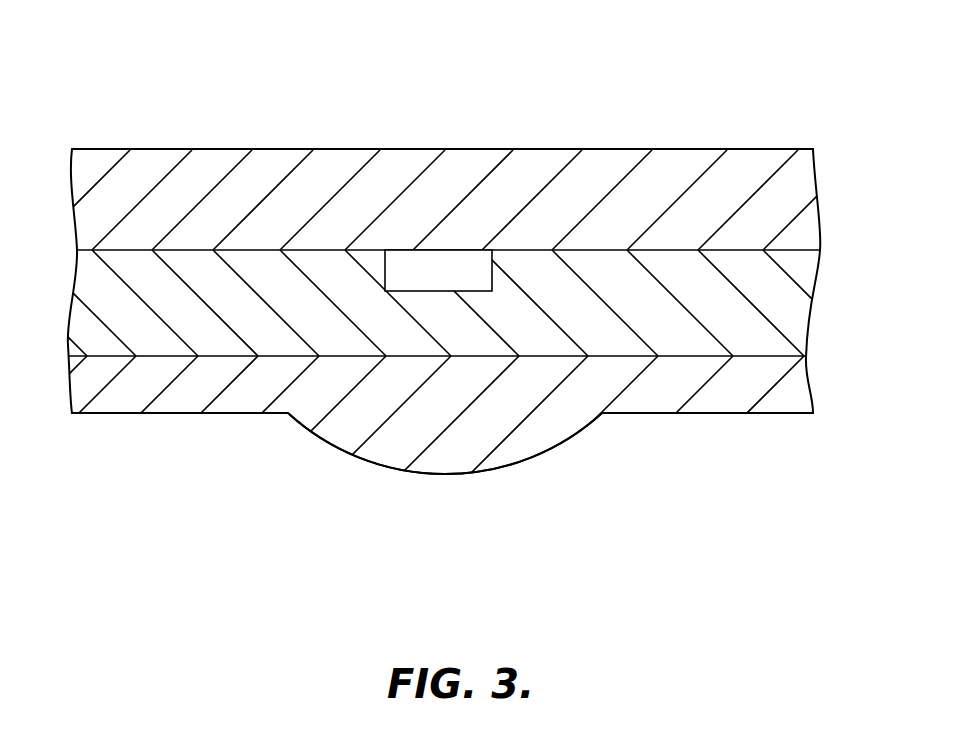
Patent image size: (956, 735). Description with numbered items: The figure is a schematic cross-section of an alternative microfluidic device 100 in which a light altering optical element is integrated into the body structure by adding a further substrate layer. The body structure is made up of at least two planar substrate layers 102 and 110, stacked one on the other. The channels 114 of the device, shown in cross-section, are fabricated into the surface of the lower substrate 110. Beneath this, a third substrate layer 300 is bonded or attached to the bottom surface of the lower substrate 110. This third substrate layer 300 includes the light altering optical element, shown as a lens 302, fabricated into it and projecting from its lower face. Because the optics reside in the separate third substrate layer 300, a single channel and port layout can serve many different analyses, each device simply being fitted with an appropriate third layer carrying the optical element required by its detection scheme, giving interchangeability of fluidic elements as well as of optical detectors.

The microfluidic device 100 is at (70, 76).
The planar substrate layer 102 is at (817, 185).
The substrate 110 is at (812, 298).
The channels 114 is at (458, 270).
The third substrate layer 300 is at (810, 385).
The lens 302 is at (563, 440).